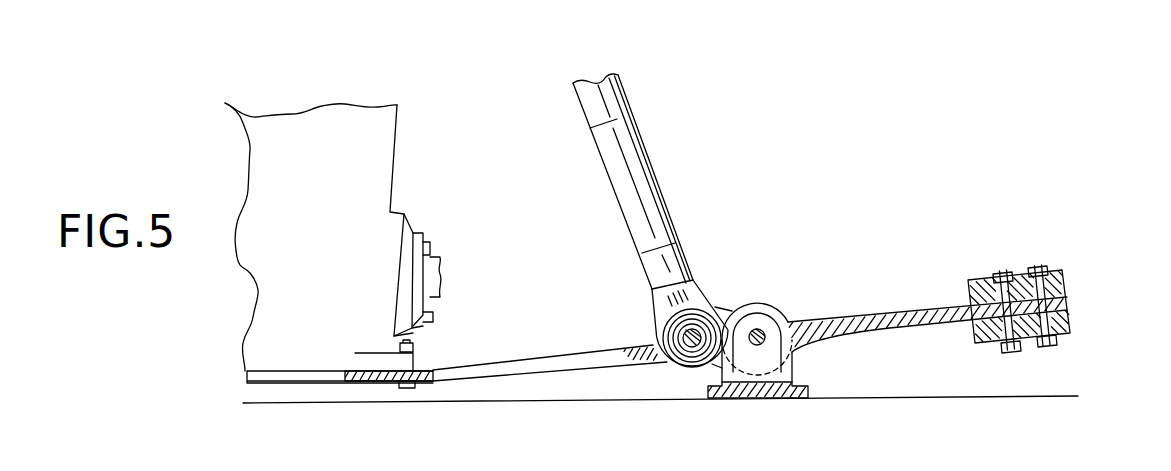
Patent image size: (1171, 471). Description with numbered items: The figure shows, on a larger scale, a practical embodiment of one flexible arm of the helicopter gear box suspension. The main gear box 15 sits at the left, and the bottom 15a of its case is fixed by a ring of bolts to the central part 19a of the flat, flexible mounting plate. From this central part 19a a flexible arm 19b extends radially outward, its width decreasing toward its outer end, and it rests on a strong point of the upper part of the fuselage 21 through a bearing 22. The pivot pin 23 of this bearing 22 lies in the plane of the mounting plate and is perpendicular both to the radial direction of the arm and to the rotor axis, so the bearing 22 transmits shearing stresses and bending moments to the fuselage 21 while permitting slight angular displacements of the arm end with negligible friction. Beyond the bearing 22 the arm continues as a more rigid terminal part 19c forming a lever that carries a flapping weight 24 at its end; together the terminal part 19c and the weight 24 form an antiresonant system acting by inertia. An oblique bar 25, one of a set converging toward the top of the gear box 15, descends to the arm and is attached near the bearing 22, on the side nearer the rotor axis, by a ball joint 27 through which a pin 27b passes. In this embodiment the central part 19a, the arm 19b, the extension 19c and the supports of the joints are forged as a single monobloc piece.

The main gear box 15 is at (318, 258).
The bottom of the case of the gear box 15a is at (412, 362).
The central part of the mounting plate 19a is at (373, 382).
The flexible arm 19b is at (524, 360).
The rigid terminal part 19c is at (890, 312).
The fuselage 21 is at (982, 401).
The bearing 22 is at (806, 370).
The pivot pin 23 is at (758, 331).
The flapping weight 24 is at (1057, 283).
The oblique bar 25 is at (635, 220).
The ball joint 27 is at (672, 374).
The pin 27b is at (694, 330).